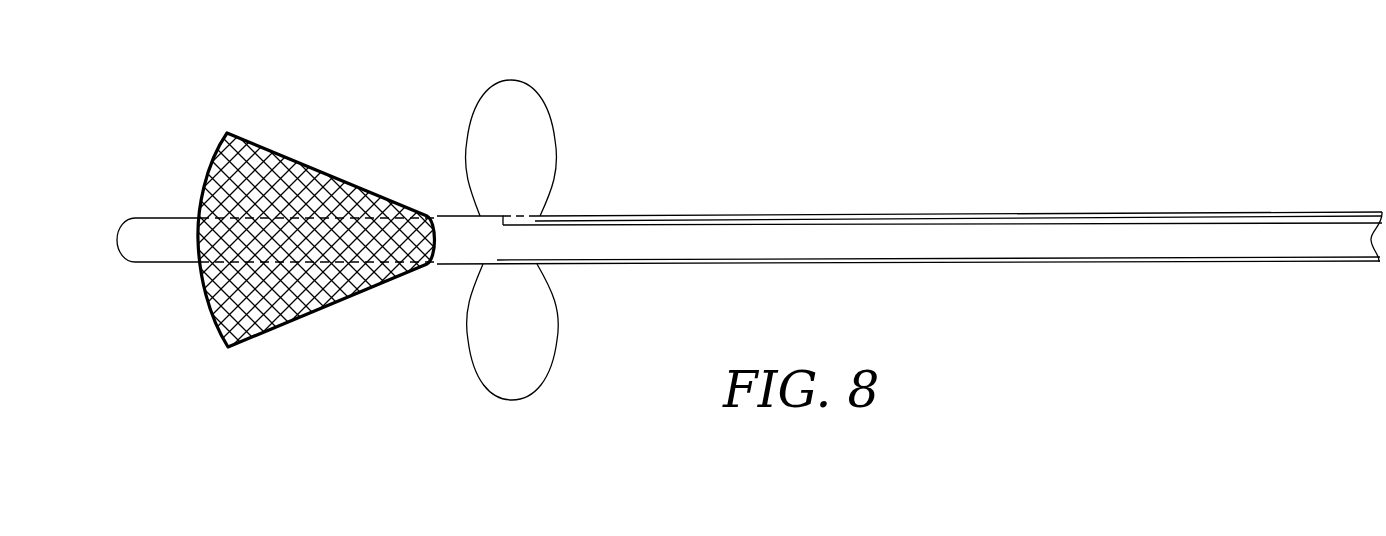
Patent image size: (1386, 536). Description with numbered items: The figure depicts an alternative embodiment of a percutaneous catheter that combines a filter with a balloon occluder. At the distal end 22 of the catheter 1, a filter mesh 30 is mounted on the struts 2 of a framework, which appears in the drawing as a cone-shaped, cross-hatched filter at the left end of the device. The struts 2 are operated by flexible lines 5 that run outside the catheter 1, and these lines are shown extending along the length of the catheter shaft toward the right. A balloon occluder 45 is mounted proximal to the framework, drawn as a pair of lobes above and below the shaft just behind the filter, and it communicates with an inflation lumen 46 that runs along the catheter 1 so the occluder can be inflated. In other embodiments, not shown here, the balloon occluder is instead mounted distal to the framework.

The catheter 1 is at (629, 190).
The struts 2 is at (303, 163).
The flexible lines 5 is at (773, 214).
The distal end 22 is at (118, 222).
The filter mesh 30 is at (357, 200).
The balloon occluder 45 is at (520, 105).
The inflation lumen 46 is at (900, 224).